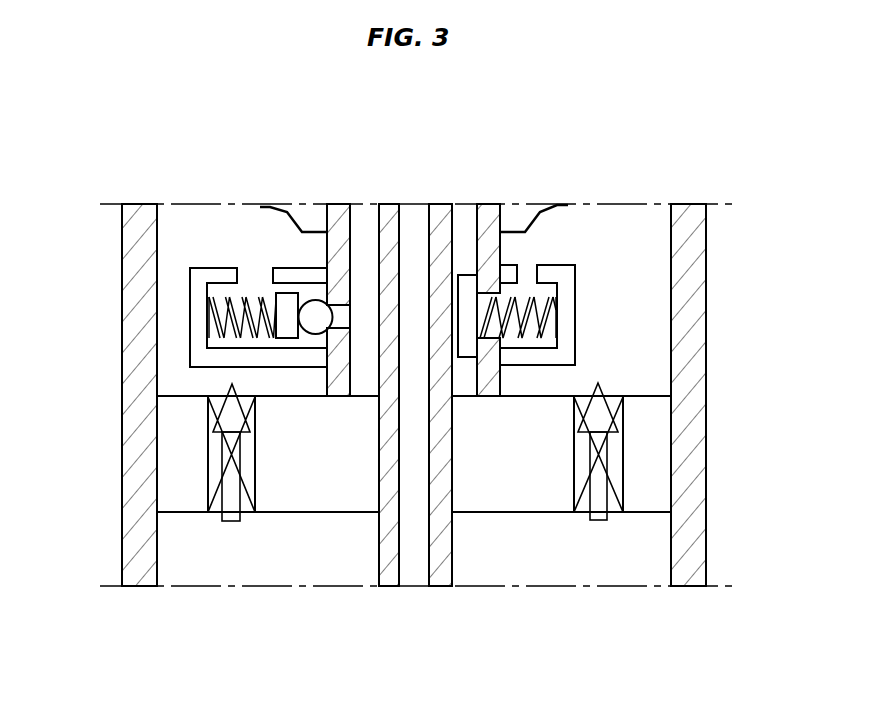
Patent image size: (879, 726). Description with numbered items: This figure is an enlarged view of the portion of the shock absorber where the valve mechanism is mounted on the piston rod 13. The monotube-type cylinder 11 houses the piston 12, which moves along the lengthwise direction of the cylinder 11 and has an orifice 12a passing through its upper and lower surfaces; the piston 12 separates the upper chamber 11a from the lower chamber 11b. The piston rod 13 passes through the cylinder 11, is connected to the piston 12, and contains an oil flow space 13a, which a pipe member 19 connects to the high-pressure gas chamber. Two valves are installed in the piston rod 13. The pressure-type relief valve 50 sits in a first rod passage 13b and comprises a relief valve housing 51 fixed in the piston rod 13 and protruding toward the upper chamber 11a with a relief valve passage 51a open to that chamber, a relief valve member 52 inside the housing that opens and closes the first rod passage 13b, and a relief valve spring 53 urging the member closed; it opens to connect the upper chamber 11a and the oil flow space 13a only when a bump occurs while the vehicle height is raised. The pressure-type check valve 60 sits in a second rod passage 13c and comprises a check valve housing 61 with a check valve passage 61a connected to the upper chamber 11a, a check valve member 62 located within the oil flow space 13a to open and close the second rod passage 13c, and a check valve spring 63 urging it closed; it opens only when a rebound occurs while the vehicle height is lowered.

The cylinder 11 is at (688, 420).
The upper chamber 11a is at (625, 227).
The lower chamber 11b is at (253, 557).
The piston 12 is at (505, 493).
The orifice 12a is at (210, 483).
The piston rod 13 is at (487, 222).
The oil flow space 13a is at (368, 218).
The first rod passage 13b is at (343, 310).
The second rod passage 13c is at (478, 323).
The pipe member 19 is at (385, 548).
The pressure-type relief valve 50 is at (186, 316).
The relief valve housing 51 is at (196, 277).
The relief valve passage 51a is at (243, 278).
The relief valve member 52 is at (312, 322).
The relief valve spring 53 is at (210, 333).
The pressure-type check valve 60 is at (583, 295).
The check valve housing 61 is at (573, 276).
The check valve passage 61a is at (522, 277).
The check valve member 62 is at (463, 272).
The check valve spring 63 is at (546, 285).